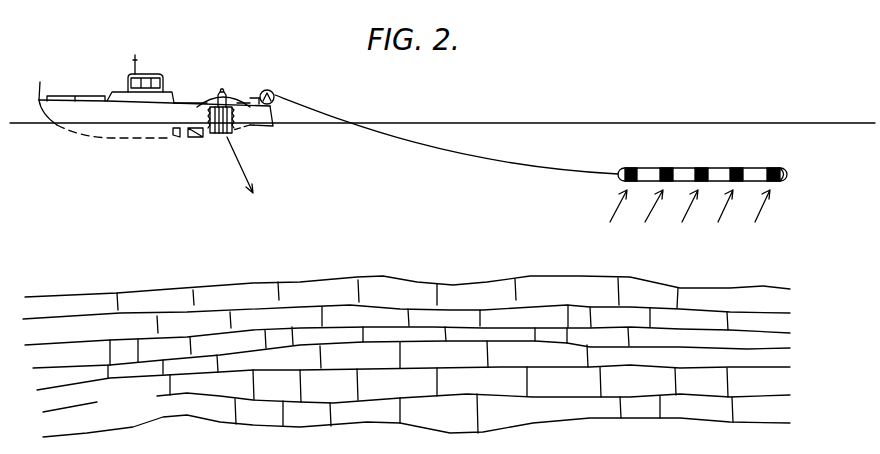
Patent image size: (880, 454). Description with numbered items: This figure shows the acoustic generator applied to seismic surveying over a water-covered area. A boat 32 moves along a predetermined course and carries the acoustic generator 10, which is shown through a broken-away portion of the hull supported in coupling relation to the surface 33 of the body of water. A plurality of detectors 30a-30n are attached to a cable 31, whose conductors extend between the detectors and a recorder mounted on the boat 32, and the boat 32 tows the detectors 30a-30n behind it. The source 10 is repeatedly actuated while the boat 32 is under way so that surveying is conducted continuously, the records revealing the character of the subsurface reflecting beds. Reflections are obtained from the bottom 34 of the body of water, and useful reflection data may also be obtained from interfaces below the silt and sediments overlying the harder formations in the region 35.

The acoustic generator 10 is at (213, 107).
The detector 30a is at (630, 166).
The detector 30n is at (768, 166).
The cable 31 is at (382, 134).
The boat 32 is at (67, 107).
The surface of the body of water 33 is at (468, 123).
The bottom of the body of water 34 is at (172, 288).
The region below the sediments 35 is at (130, 427).